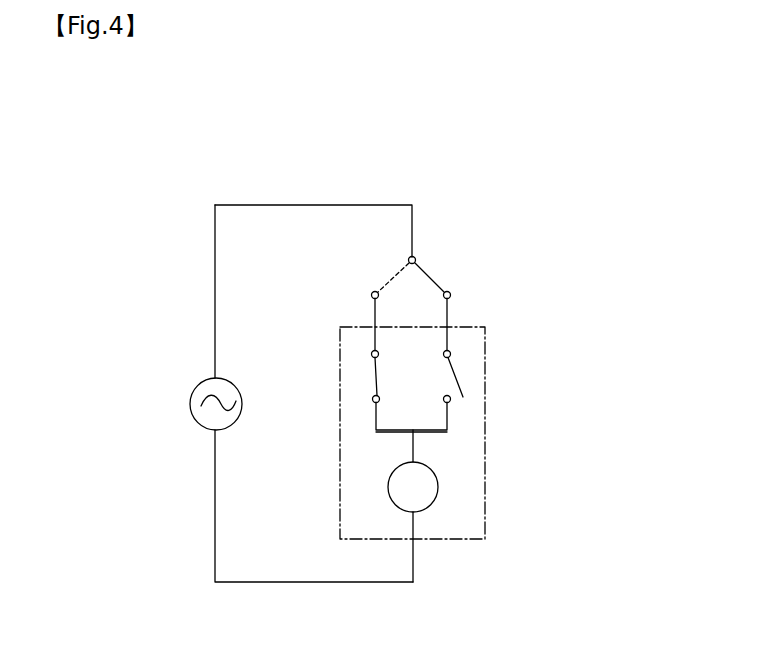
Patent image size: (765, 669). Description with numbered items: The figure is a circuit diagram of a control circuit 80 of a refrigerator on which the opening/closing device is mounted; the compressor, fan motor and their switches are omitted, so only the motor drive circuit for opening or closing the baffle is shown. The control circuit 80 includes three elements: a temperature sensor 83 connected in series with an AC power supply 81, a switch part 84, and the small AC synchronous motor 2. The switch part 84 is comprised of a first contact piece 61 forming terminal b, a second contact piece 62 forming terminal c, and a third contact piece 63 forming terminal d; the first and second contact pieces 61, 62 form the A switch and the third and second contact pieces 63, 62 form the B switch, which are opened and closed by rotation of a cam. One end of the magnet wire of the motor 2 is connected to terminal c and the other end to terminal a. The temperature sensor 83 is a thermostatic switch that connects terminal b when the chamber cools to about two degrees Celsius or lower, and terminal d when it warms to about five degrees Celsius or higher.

The control circuit 80 is at (478, 193).
The AC power supply 81 is at (197, 387).
The temperature sensor 83 is at (432, 278).
The switch part 84 is at (583, 270).
The first contact piece 61 is at (377, 367).
The third contact piece 63 is at (462, 382).
The second contact piece 62 is at (448, 432).
The small AC synchronous motor 2 is at (438, 487).